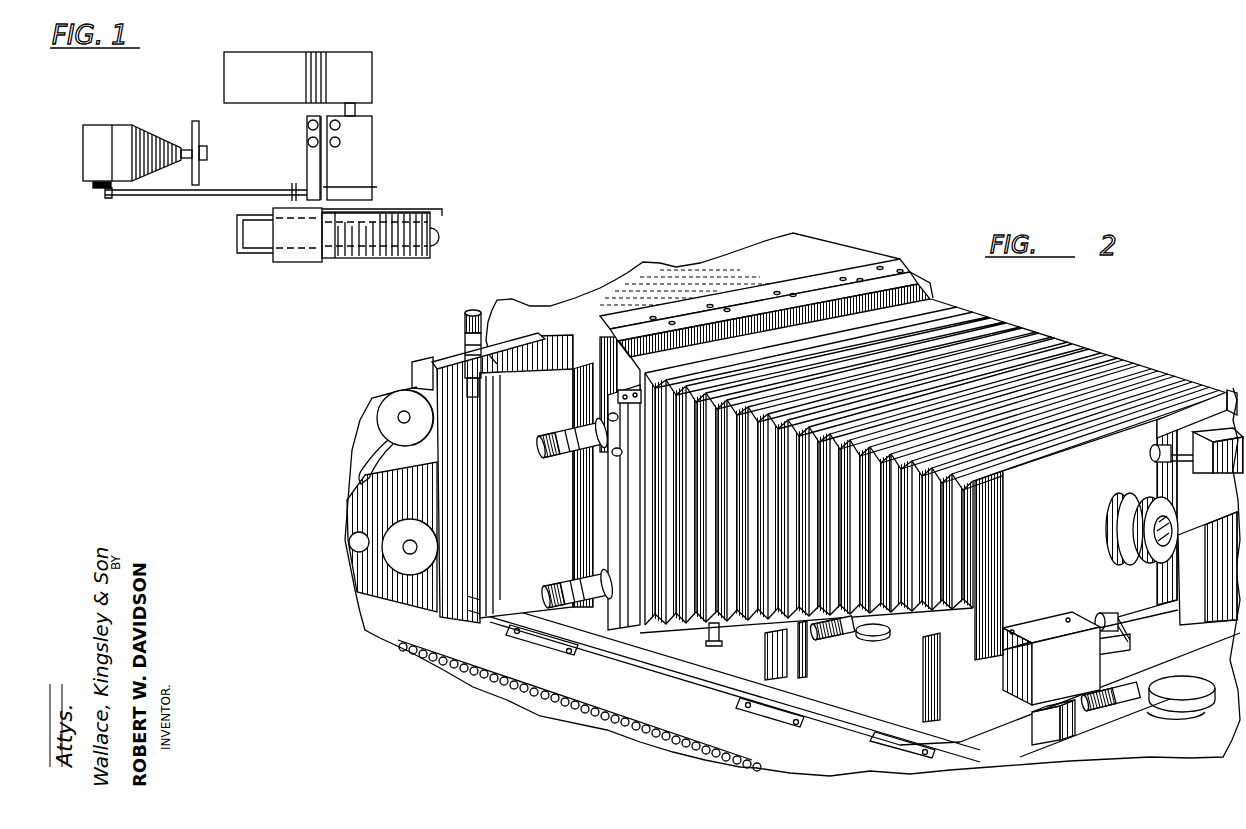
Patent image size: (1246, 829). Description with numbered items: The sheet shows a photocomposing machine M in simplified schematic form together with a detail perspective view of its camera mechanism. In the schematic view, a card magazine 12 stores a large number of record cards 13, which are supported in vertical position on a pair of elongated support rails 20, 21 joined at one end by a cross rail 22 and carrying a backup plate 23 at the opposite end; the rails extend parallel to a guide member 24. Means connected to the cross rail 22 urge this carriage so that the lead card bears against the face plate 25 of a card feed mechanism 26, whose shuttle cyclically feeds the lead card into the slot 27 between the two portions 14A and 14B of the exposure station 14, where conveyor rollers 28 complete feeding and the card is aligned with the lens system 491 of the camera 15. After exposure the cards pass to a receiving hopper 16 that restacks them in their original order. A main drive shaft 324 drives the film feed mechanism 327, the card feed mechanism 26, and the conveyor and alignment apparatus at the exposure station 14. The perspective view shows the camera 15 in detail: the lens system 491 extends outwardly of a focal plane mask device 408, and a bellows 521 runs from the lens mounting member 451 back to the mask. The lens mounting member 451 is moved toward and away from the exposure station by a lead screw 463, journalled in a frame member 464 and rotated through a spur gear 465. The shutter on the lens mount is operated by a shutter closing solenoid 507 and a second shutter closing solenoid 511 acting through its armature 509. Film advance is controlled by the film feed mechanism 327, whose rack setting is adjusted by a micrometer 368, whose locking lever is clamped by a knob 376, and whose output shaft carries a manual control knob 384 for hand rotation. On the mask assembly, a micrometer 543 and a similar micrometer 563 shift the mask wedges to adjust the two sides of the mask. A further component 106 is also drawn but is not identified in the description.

In FIG. 1, the card magazine 12 is at (397, 262).
In FIG. 1, the record cards 13 is at (377, 249).
In FIG. 1, the exposure station 14 is at (357, 168).
In FIG. 1, the exposure station portion 14A is at (362, 148).
In FIG. 1, the exposure station portion 14B is at (307, 151).
In FIG. 1, the camera 15 is at (151, 111).
In FIG. 2, the camera 15 is at (906, 254).
In FIG. 1, the receiving hopper 16 is at (352, 74).
In FIG. 1, the support rail 20 is at (245, 214).
In FIG. 1, the support rail 21 is at (258, 254).
In FIG. 1, the cross rail 22 is at (237, 236).
In FIG. 1, the backup plate 23 is at (433, 249).
In FIG. 1, the guide member 24 is at (425, 212).
In FIG. 1, the face plate 25 is at (324, 252).
In FIG. 1, the card feed mechanism 26 is at (302, 242).
In FIG. 1, the slot 27 is at (361, 188).
In FIG. 1, the conveyor rollers 28 is at (307, 124).
In FIG. 1, the photocomposing machine M is at (381, 130).
In FIG. 2, the knob 106 is at (1186, 682).
In FIG. 1, the main drive shaft 324 is at (160, 197).
In FIG. 1, the film feed mechanism 327 is at (100, 185).
In FIG. 2, the film feed mechanism 327 is at (381, 386).
In FIG. 2, the micrometer 368 is at (462, 331).
In FIG. 2, the knob 376 is at (376, 428).
In FIG. 2, the manual control knob 384 is at (413, 577).
In FIG. 1, the focal plane mask device 408 is at (129, 125).
In FIG. 2, the focal plane mask device 408 is at (632, 382).
In FIG. 1, the lens mounting member 451 is at (193, 121).
In FIG. 2, the lens mounting member 451 is at (1213, 392).
In FIG. 2, the lead screw 463 is at (1100, 708).
In FIG. 2, the frame member 464 is at (792, 650).
In FIG. 2, the spur gear 465 is at (1121, 693).
In FIG. 1, the lens system 491 is at (209, 153).
In FIG. 2, the lens system 491 is at (1145, 522).
In FIG. 2, the shutter closing solenoid 507 is at (1208, 473).
In FIG. 2, the armature 509 is at (1158, 468).
In FIG. 2, the shutter closing solenoid 511 is at (1051, 634).
In FIG. 2, the bellows 521 is at (1105, 367).
In FIG. 2, the micrometer 543 is at (557, 587).
In FIG. 2, the micrometer 563 is at (574, 454).